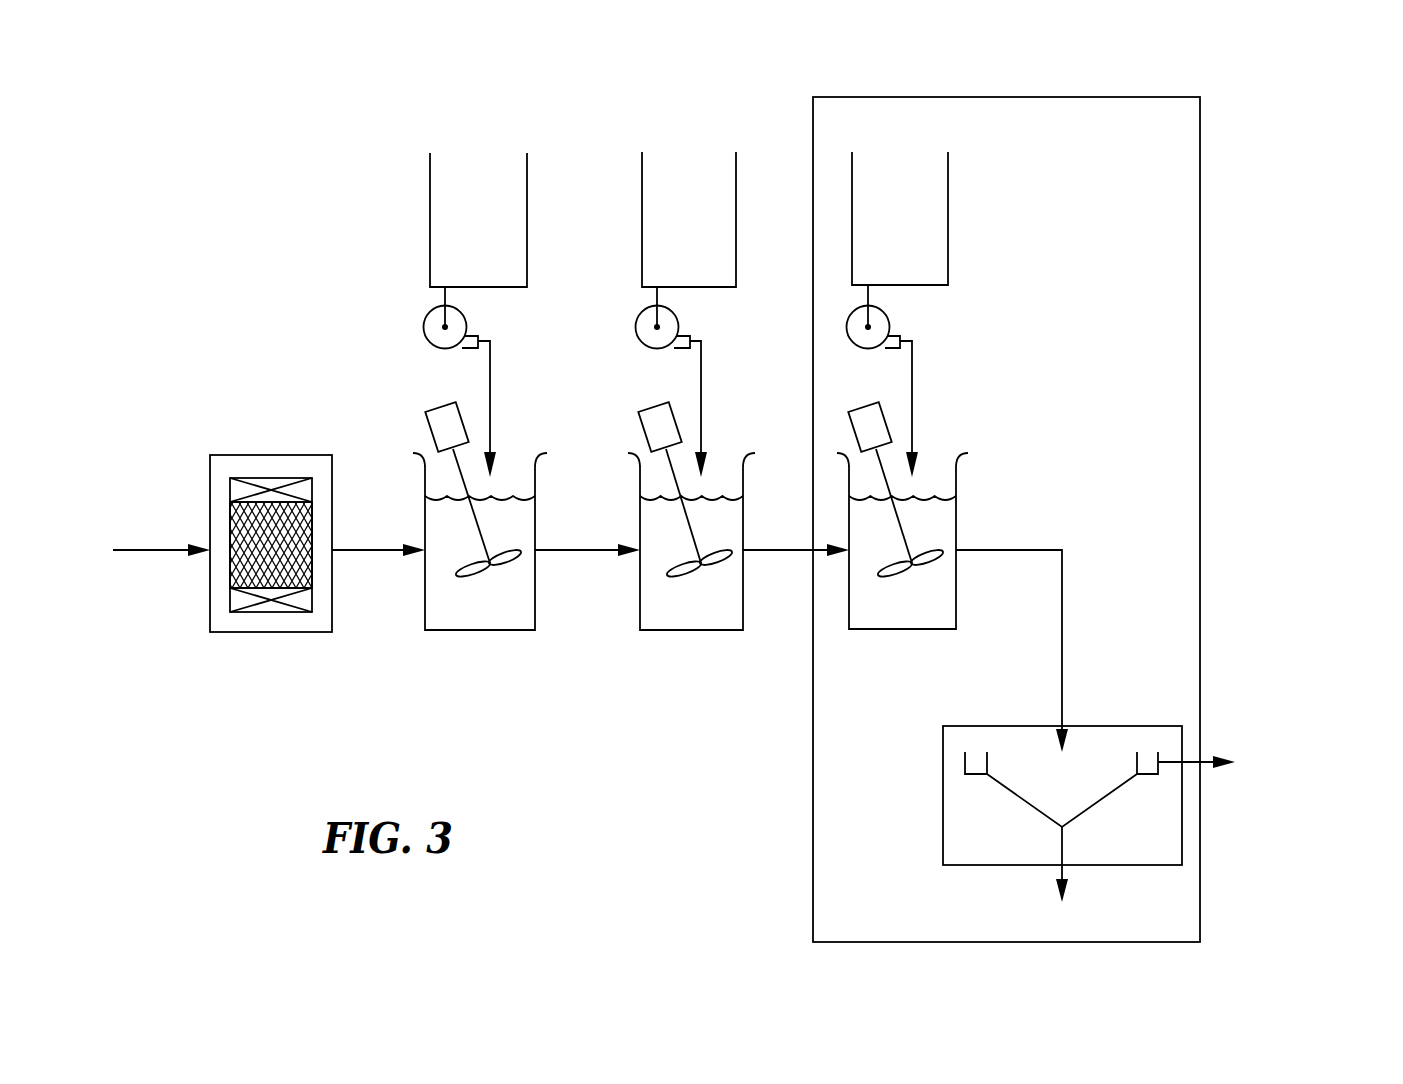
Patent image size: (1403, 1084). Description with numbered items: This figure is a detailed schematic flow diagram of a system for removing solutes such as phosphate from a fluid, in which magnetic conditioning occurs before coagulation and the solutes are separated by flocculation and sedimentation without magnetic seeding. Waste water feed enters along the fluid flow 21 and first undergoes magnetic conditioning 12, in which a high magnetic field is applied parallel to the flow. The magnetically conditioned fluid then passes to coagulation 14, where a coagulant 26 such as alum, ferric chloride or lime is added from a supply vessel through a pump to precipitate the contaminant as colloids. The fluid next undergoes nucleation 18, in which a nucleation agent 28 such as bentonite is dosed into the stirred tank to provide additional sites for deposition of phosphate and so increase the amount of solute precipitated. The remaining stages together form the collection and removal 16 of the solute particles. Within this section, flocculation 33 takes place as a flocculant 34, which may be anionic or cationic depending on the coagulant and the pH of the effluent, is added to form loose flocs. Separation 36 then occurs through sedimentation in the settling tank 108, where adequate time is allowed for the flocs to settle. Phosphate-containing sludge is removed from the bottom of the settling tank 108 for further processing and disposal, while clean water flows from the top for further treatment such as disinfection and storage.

The magnetic conditioning 12 is at (275, 455).
The fluid flow 21 is at (165, 556).
The coagulant 26 is at (527, 226).
The coagulation 14 is at (535, 492).
The nucleation agent 28 is at (736, 226).
The nucleation 18 is at (743, 492).
The collection and removal 16 is at (1198, 260).
The flocculant 34 is at (948, 226).
The flocculation 33 is at (956, 492).
The separation 36 is at (1028, 795).
The settling tank 108 is at (1003, 790).